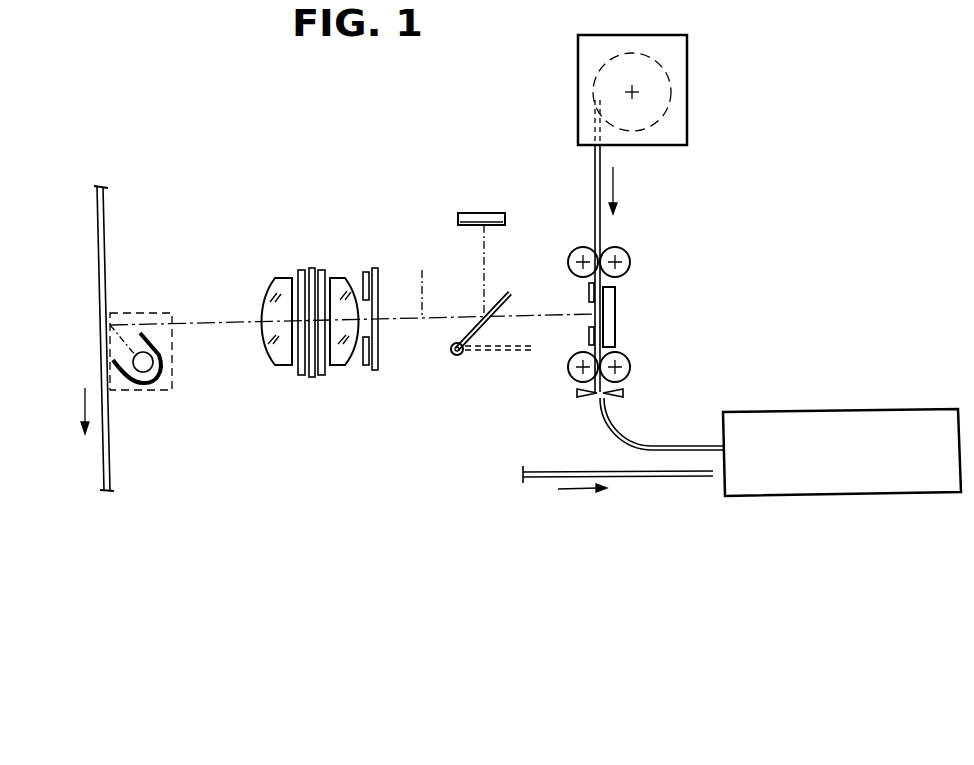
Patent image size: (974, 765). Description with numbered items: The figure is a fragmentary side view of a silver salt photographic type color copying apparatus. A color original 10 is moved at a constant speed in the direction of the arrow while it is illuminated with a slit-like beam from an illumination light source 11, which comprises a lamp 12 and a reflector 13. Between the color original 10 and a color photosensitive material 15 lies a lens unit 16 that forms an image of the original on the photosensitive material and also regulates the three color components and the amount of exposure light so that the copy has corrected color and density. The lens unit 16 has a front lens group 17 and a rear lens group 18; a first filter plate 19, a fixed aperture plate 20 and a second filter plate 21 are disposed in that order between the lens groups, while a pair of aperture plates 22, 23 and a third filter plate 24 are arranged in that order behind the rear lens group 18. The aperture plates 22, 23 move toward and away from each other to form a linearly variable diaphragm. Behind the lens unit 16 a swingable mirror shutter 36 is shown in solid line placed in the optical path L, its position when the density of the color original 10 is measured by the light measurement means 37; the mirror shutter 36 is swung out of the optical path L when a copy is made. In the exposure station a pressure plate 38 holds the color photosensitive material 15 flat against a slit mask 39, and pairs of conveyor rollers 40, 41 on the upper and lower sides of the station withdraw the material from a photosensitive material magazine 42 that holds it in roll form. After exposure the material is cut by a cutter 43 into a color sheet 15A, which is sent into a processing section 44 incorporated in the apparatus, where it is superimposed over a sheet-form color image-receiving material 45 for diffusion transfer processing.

The color original 10 is at (104, 218).
The illumination light source 11 is at (141, 313).
The lamp 12 is at (145, 373).
The reflector 13 is at (160, 350).
The color photosensitive material 15 is at (594, 195).
The color sheet 15A is at (637, 440).
The lens unit 16 is at (337, 309).
The front lens group 17 is at (284, 363).
The rear lens group 18 is at (340, 366).
The first filter plate 19 is at (300, 376).
The fixed aperture plate 20 is at (310, 268).
The second filter plate 21 is at (321, 376).
The aperture plate 22 is at (366, 272).
The aperture plate 23 is at (367, 366).
The third filter plate 24 is at (379, 365).
The swingable mirror shutter 36 is at (506, 293).
The light measurement means 37 is at (482, 212).
The pressure plate 38 is at (618, 308).
The slit mask 39 is at (588, 292).
The conveyor rollers 40 is at (630, 259).
The conveyor rollers 41 is at (632, 366).
The photosensitive material magazine 42 is at (683, 88).
The cutter 43 is at (581, 398).
The processing section 44 is at (793, 412).
The color image-receiving material 45 is at (643, 478).
The optical path L is at (420, 283).